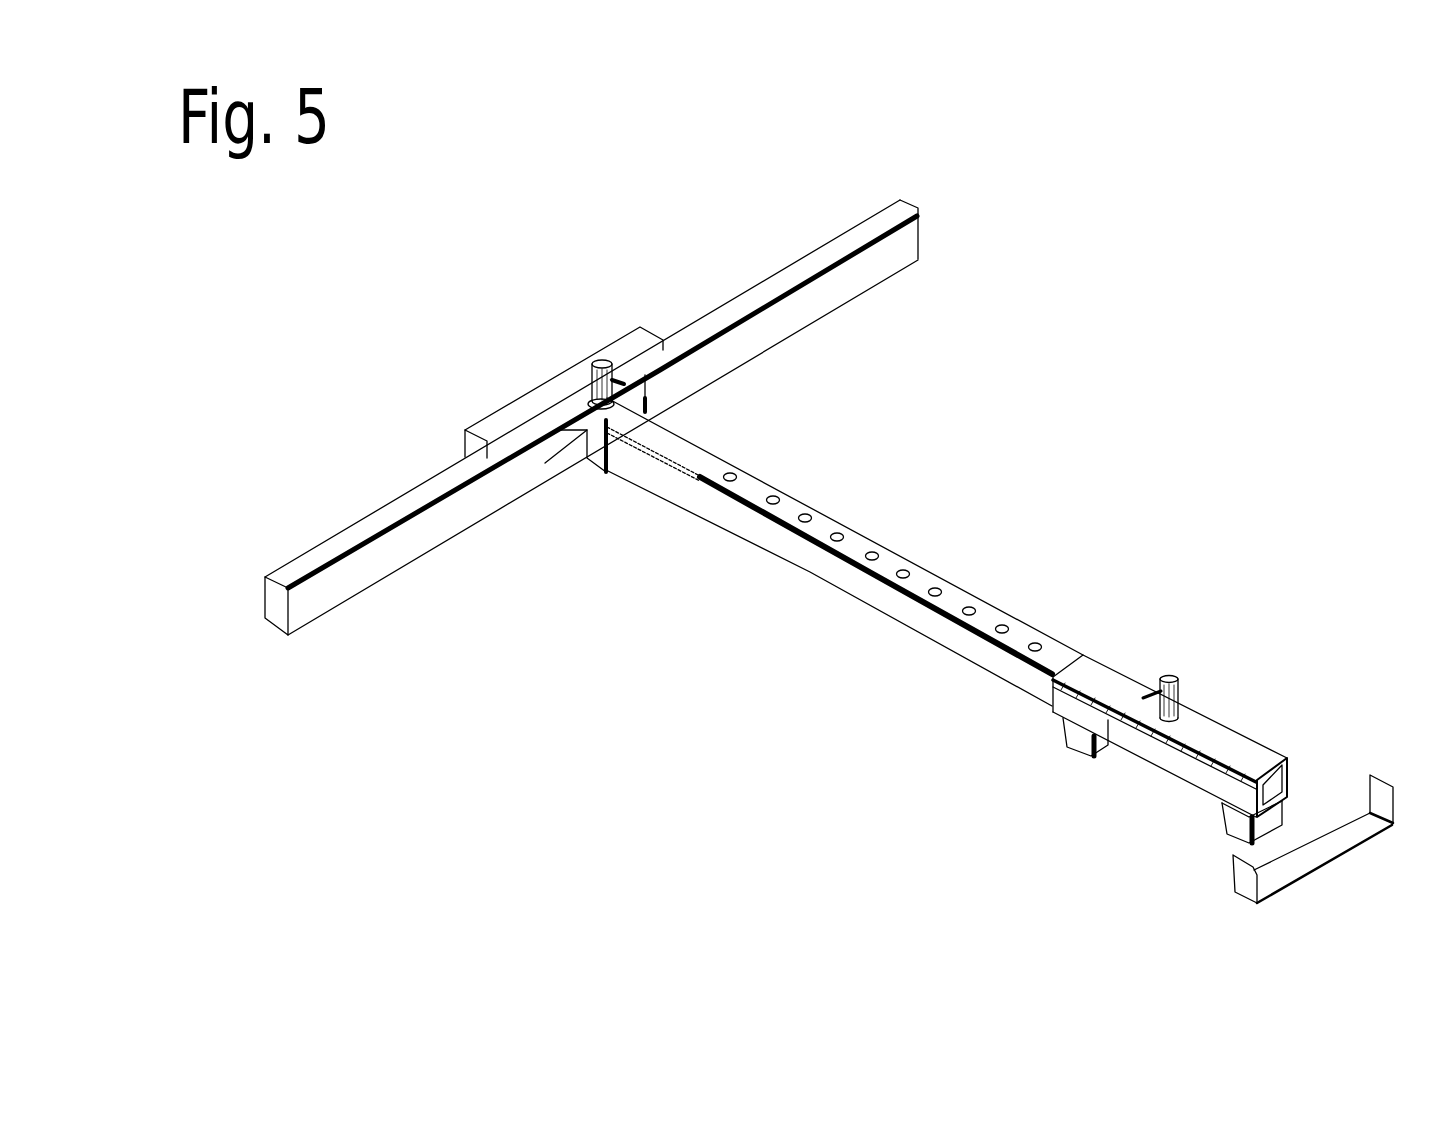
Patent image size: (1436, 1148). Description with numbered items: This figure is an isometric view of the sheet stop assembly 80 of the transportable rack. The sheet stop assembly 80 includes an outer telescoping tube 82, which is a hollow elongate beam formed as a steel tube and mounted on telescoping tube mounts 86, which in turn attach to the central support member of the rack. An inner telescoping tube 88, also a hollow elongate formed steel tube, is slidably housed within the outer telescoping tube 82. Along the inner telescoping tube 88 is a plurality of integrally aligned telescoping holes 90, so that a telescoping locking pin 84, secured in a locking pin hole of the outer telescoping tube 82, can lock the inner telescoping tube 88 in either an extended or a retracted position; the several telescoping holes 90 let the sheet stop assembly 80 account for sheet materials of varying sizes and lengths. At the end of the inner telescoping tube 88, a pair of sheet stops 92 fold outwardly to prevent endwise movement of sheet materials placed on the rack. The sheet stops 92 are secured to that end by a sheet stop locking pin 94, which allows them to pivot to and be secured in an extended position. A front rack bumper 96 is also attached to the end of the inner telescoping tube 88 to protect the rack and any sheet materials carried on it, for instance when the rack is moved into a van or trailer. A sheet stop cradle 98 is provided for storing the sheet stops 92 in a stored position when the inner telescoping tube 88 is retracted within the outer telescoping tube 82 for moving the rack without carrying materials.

The sheet stop assembly 80 is at (682, 735).
The outer telescoping tube 82 is at (1213, 737).
The telescoping locking pin 84 is at (1175, 674).
The telescoping tube mounts 86 is at (1082, 739).
The inner telescoping tube 88 is at (795, 552).
The telescoping holes 90 is at (738, 473).
The sheet stops 92 is at (873, 271).
The sheet stop locking pin 94 is at (602, 359).
The front rack bumper 96 is at (547, 398).
The sheet stop cradle 98 is at (1323, 848).